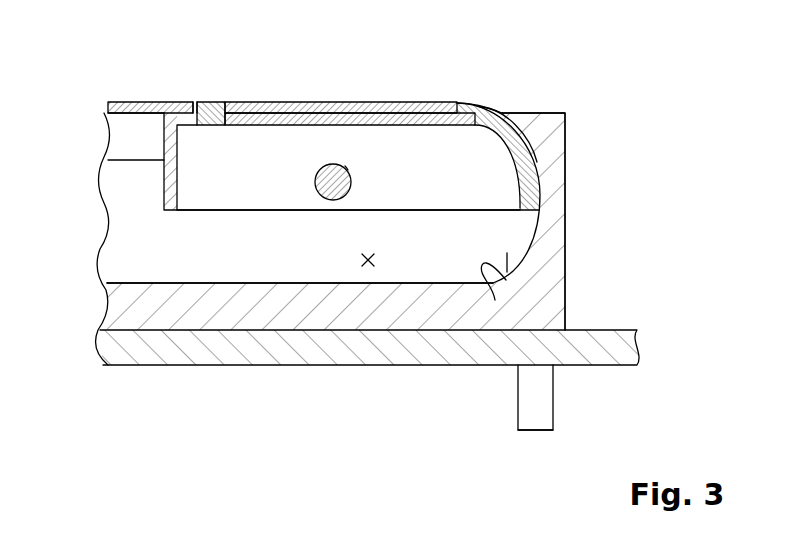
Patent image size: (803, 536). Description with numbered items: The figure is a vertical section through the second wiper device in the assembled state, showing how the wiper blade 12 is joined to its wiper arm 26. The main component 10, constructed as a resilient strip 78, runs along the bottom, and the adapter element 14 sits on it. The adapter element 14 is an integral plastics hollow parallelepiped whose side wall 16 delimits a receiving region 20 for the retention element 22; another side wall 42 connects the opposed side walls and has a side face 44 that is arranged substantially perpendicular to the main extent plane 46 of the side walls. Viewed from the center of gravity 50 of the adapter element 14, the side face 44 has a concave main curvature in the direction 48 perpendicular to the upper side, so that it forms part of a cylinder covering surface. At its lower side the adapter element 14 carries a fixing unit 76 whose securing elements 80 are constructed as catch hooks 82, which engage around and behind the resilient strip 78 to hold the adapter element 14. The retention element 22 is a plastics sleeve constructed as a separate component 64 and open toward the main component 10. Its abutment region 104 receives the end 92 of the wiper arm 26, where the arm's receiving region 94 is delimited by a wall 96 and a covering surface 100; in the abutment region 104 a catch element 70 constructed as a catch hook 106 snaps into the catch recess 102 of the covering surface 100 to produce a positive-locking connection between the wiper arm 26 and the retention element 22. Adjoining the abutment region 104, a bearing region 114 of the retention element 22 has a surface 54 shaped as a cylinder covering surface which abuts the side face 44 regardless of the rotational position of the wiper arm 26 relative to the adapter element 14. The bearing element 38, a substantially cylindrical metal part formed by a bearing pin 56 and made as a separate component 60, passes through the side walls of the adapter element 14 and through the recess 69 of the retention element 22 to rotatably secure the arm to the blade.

The main component 10 is at (412, 347).
The resilient strip 78 is at (625, 348).
The wiper blade 12 is at (88, 70).
The adapter element 14 is at (552, 283).
The side wall 16 is at (258, 260).
The receiving region 20 is at (320, 262).
The retention element 22 is at (348, 131).
The separate component 64 is at (437, 157).
The wiper arm 26 is at (250, 110).
The bearing element 38 is at (334, 126).
The bearing pin 56 is at (334, 126).
The separate component 60 is at (333, 182).
The other side wall 42 is at (552, 157).
The side face 44 is at (495, 300).
The main extent plane 46 is at (147, 228).
The direction 48 is at (703, 165).
The center of gravity 50 is at (368, 268).
The surface 54 is at (483, 103).
The recess 69 is at (345, 166).
The catch element 70 is at (198, 88).
The catch hook 106 is at (212, 115).
The fixing unit 76 is at (568, 385).
The securing element 80 is at (548, 443).
The catch hook 82 is at (537, 410).
The end 92 is at (515, 100).
The receiving region 94 is at (128, 127).
The wall 96 is at (120, 149).
The covering surface 100 is at (280, 102).
The catch recess 102 is at (196, 103).
The abutment region 104 is at (235, 141).
The bearing region 114 is at (534, 126).